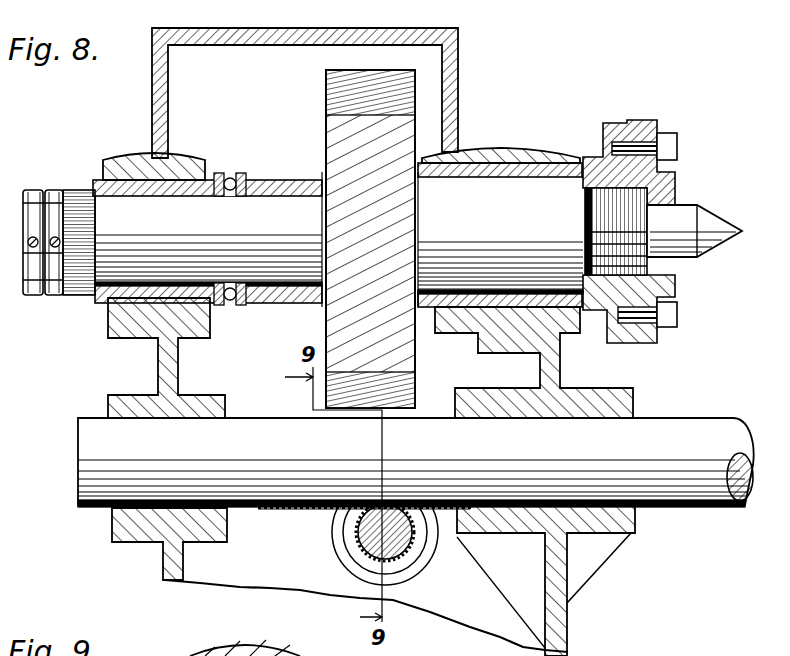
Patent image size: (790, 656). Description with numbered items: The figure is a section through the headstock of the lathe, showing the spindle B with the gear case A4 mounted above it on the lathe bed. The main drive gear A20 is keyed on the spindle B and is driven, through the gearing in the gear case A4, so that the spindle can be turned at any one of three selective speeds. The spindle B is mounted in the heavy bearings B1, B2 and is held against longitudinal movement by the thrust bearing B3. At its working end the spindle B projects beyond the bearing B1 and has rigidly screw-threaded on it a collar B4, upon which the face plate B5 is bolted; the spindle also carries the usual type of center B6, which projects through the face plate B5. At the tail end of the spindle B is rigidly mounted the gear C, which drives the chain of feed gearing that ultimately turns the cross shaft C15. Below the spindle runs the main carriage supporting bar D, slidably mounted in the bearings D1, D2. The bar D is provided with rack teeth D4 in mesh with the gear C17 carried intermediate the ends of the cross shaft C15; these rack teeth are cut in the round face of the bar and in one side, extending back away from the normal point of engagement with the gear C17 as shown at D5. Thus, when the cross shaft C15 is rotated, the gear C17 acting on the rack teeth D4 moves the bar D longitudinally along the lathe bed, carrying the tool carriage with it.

The gear case A4 is at (458, 54).
The main drive gear A20 is at (342, 118).
The spindle B is at (270, 207).
The bearing B1 is at (502, 160).
The bearing B2 is at (117, 167).
The thrust bearing B3 is at (231, 172).
The collar B4 is at (602, 130).
The face plate B5 is at (681, 279).
The center B6 is at (711, 223).
The gear C is at (73, 189).
The cross shaft C15 is at (394, 534).
The gear C17 is at (356, 528).
The main carriage supporting bar D is at (254, 433).
The bearing D1 is at (122, 526).
The bearing D2 is at (631, 521).
The rack teeth D4 is at (257, 509).
The extended rack teeth D5 is at (265, 509).